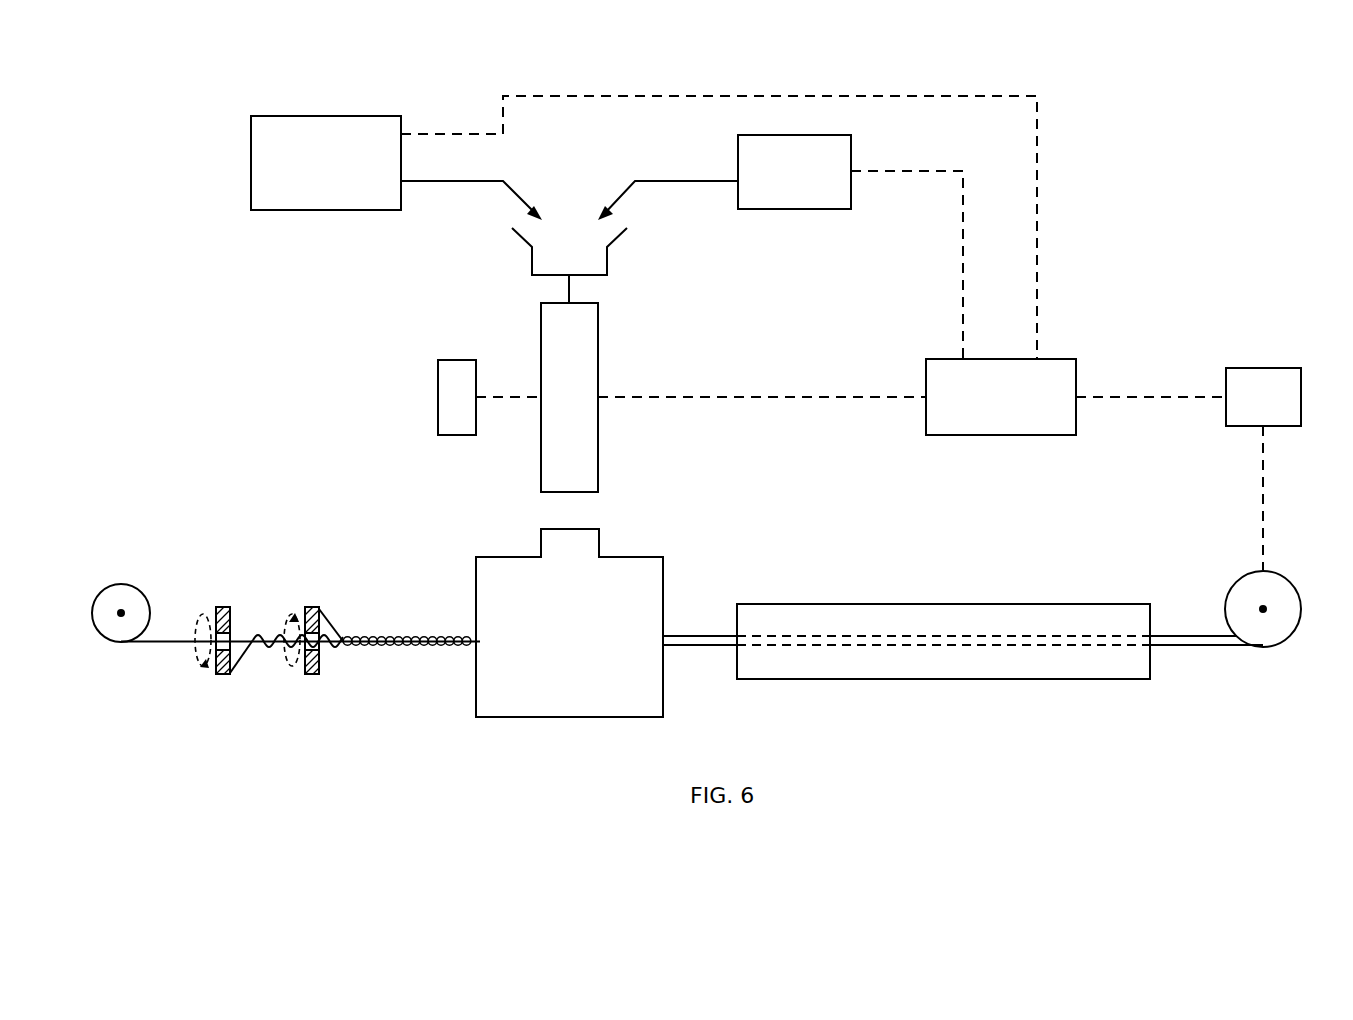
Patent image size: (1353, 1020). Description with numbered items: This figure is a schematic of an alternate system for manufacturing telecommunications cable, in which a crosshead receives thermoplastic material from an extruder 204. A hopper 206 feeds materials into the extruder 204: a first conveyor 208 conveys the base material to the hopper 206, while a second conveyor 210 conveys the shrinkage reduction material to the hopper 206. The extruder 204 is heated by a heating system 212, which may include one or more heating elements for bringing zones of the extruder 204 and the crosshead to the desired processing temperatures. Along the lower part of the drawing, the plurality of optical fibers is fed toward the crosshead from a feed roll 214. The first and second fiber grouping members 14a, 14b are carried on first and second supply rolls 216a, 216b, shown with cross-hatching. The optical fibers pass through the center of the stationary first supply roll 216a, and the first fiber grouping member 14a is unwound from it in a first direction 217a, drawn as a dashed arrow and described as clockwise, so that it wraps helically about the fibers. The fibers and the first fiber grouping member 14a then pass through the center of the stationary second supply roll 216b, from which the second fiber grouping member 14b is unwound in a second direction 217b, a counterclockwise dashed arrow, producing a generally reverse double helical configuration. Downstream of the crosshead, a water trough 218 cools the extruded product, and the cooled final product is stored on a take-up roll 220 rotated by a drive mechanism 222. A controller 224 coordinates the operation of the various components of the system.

The second conveyor 210 is at (302, 116).
The first conveyor 208 is at (851, 148).
The hopper 206 is at (616, 236).
The extruder 204 is at (612, 340).
The heating system 212 is at (438, 412).
The controller 224 is at (1067, 359).
The drive mechanism 222 is at (1263, 368).
The feed roll 214 is at (113, 586).
The first supply roll 216a is at (223, 608).
The second supply roll 216b is at (313, 677).
The first direction 217a is at (195, 657).
The second direction 217b is at (290, 632).
The first fiber grouping member 14a is at (266, 645).
The second fiber grouping member 14b is at (340, 633).
The water trough 218 is at (945, 604).
The take-up roll 220 is at (1237, 582).